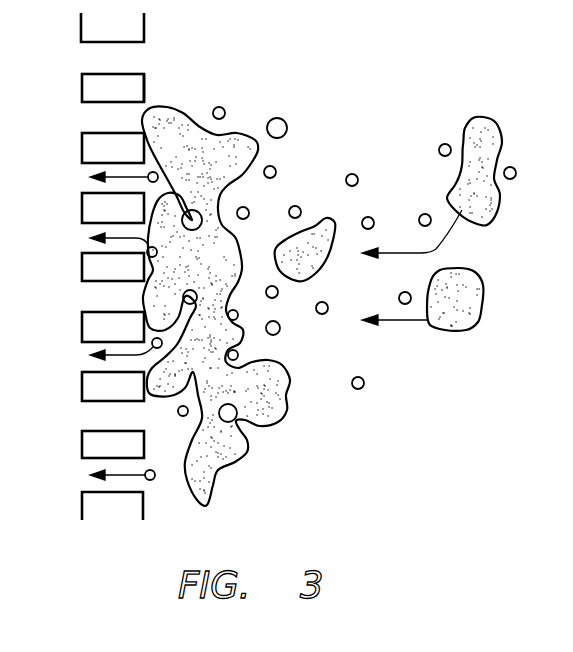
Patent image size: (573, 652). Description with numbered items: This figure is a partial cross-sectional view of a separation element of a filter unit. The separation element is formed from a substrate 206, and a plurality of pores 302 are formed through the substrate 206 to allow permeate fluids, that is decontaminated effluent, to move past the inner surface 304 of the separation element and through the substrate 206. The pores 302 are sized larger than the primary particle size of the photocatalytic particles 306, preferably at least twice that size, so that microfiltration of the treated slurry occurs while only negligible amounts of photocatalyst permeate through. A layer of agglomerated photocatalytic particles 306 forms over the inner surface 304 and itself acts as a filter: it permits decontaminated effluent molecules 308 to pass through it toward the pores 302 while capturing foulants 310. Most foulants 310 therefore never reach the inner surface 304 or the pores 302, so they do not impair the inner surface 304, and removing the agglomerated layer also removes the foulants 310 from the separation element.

The substrate 206 is at (84, 86).
The pores 302 is at (87, 296).
The inner surface 304 is at (158, 88).
The photocatalytic particles 306 is at (487, 117).
The decontaminated effluent molecules 308 is at (177, 411).
The foulants 310 is at (237, 416).